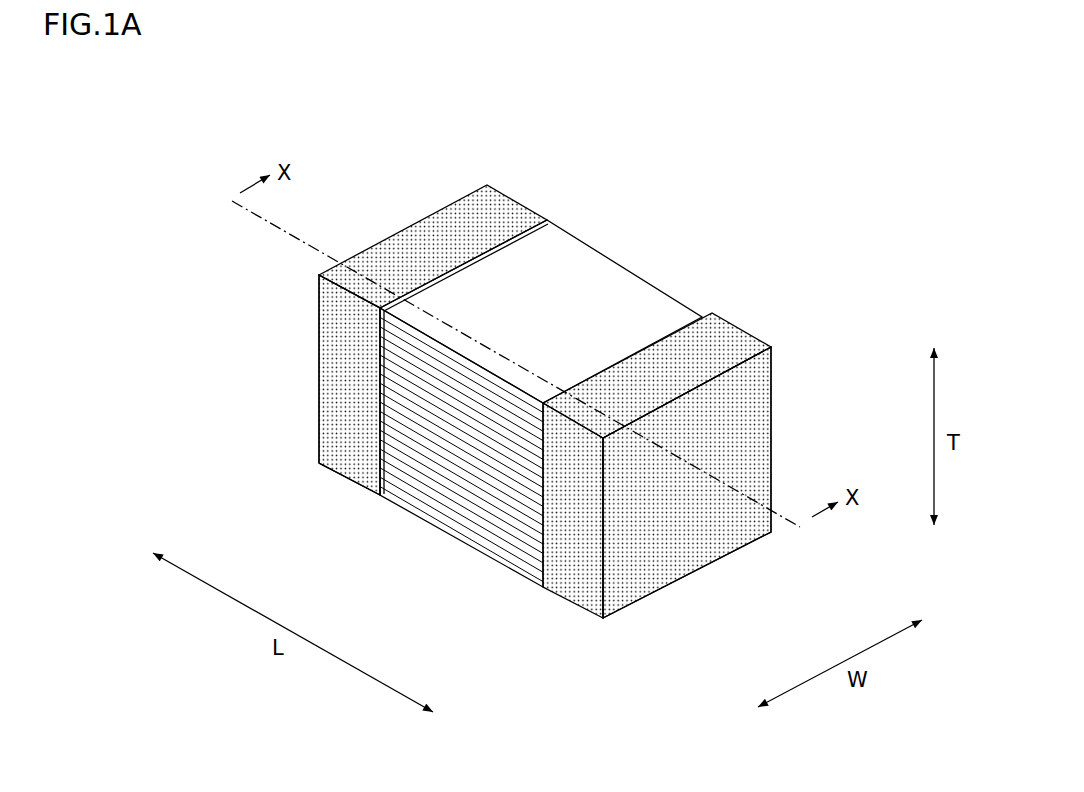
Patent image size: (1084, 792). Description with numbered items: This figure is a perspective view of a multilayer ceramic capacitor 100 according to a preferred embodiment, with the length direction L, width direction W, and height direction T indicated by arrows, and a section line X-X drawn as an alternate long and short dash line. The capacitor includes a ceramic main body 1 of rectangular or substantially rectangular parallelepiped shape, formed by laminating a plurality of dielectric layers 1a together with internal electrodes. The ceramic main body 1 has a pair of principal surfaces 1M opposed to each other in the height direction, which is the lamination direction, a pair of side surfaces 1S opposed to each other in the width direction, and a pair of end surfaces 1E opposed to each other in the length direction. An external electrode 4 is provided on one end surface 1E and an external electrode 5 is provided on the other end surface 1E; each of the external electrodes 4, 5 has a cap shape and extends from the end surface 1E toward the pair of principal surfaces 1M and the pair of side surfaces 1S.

The multilayer ceramic capacitor 100 is at (230, 75).
The ceramic main body 1 is at (552, 267).
The principal surfaces 1M is at (558, 300).
The side surfaces 1S is at (643, 270).
The end surfaces 1E is at (393, 218).
The dielectric layers 1a is at (492, 530).
The external electrode 4 is at (460, 233).
The external electrode 5 is at (730, 318).